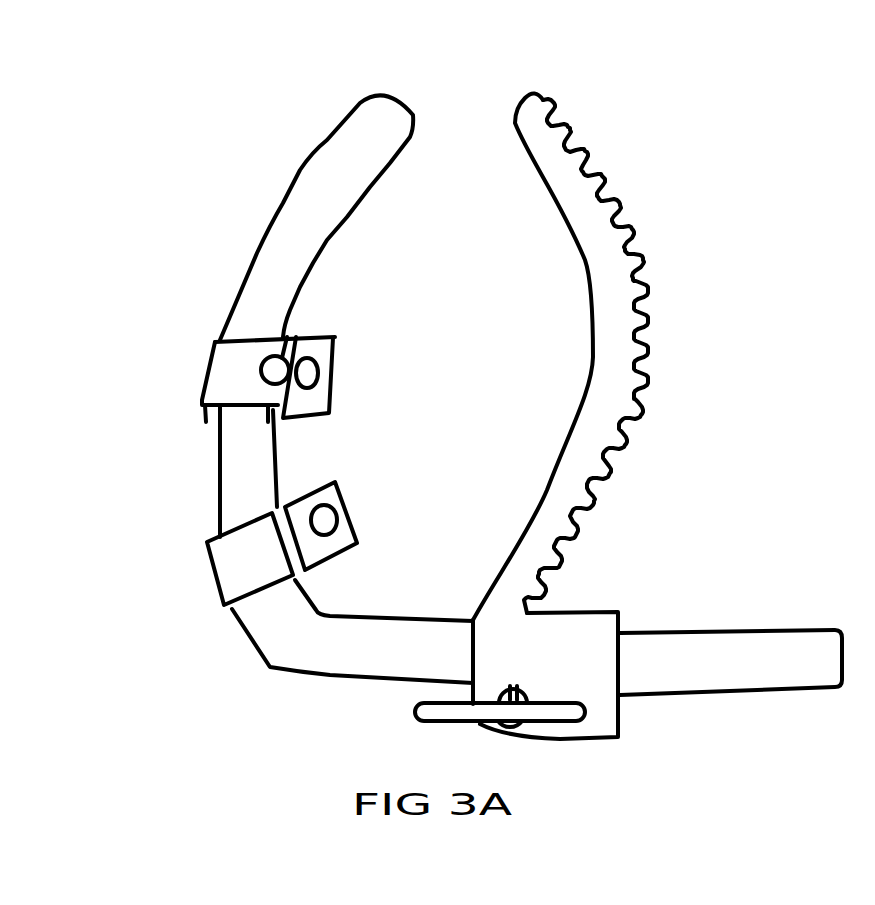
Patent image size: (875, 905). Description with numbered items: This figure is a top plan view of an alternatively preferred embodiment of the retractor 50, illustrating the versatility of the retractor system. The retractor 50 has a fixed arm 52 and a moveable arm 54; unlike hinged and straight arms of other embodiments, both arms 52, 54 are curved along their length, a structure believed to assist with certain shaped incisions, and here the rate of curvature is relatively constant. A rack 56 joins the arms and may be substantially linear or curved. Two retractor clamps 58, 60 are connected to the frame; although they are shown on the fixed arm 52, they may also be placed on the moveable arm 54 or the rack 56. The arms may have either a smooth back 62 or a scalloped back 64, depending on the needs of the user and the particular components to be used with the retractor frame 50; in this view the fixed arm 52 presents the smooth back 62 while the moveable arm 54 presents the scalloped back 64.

The retractor 50 is at (636, 110).
The fixed arm 52 is at (240, 470).
The moveable arm 54 is at (593, 433).
The rack 56 is at (680, 630).
The retractor clamp 58 is at (347, 532).
The retractor clamp 60 is at (317, 398).
The smooth back 62 is at (272, 222).
The scalloped back 64 is at (630, 242).